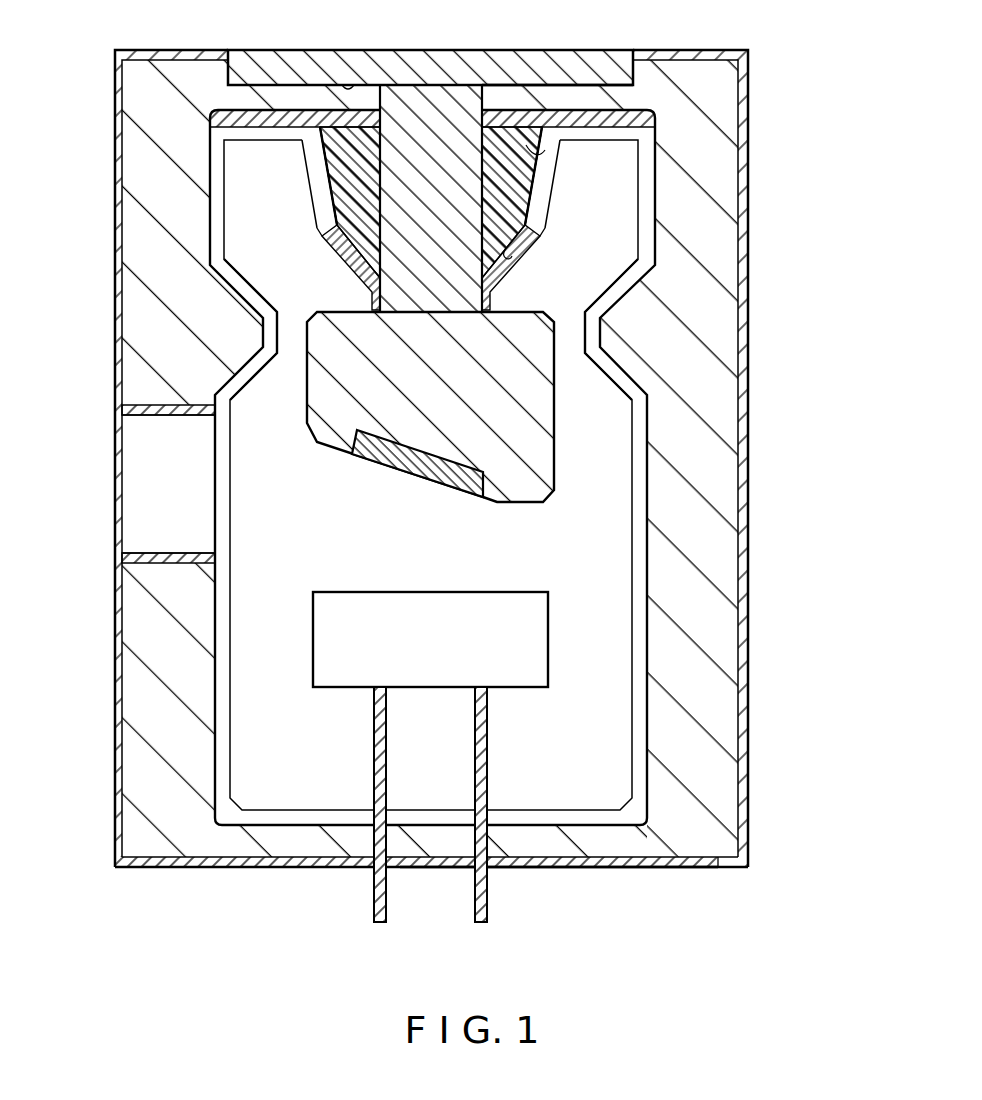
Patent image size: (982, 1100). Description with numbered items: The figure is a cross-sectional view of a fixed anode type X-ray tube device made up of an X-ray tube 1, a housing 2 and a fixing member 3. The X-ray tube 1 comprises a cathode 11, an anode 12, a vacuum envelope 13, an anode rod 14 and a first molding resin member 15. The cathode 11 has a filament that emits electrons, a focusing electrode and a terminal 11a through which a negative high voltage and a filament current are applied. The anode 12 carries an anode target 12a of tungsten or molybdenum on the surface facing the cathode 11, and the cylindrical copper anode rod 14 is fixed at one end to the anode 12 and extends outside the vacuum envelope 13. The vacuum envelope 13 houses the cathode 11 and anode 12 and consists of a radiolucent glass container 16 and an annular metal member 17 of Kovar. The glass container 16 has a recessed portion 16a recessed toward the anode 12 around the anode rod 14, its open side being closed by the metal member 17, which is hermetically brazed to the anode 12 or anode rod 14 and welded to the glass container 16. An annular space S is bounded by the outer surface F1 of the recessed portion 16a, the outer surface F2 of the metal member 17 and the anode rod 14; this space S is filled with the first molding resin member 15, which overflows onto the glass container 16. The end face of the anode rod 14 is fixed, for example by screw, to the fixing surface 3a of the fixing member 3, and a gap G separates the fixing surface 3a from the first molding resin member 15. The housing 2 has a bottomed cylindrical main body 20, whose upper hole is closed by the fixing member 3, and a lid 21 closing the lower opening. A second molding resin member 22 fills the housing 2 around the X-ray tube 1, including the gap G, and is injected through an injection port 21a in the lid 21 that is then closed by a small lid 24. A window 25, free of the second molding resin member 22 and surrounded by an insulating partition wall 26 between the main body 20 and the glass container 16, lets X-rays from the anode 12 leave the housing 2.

The X-ray tube 1 is at (433, 478).
The housing 2 is at (487, 500).
The fixing member 3 is at (575, 65).
The fixing surface 3a is at (348, 84).
The cathode 11 is at (530, 690).
The terminal 11a is at (476, 906).
The anode 12 is at (459, 412).
The anode target 12a is at (393, 460).
The vacuum envelope 13 is at (331, 415).
The anode rod 14 is at (438, 103).
The first molding resin member 15 is at (338, 130).
The glass container 16 is at (354, 415).
The recessed portion 16a is at (298, 178).
The metal member 17 is at (342, 258).
The main body 20 is at (743, 803).
The lid 21 is at (470, 895).
The injection port 21a is at (718, 876).
The second molding resin member 22 is at (722, 484).
The small lid 24 is at (662, 868).
The window 25 is at (137, 474).
The partition wall 26 is at (155, 412).
The annular space S is at (516, 127).
The gap G is at (636, 98).
The outer surface of the glass container F1 is at (545, 150).
The outer surface of the metal member F2 is at (505, 250).